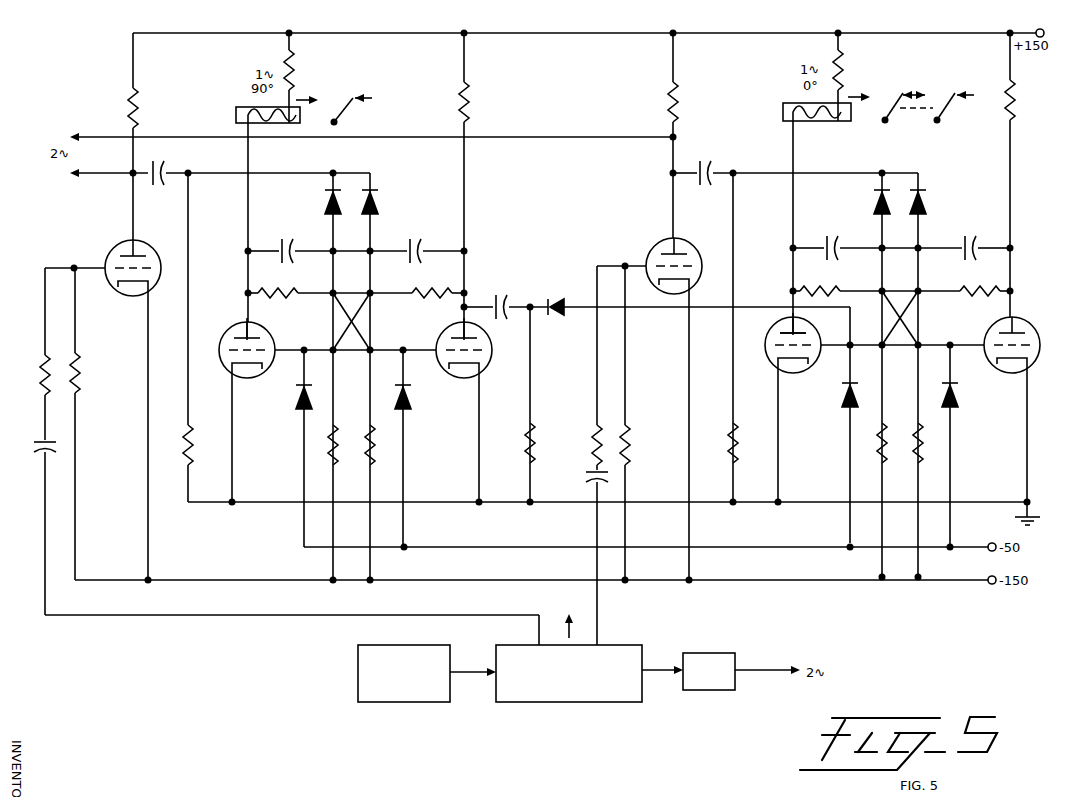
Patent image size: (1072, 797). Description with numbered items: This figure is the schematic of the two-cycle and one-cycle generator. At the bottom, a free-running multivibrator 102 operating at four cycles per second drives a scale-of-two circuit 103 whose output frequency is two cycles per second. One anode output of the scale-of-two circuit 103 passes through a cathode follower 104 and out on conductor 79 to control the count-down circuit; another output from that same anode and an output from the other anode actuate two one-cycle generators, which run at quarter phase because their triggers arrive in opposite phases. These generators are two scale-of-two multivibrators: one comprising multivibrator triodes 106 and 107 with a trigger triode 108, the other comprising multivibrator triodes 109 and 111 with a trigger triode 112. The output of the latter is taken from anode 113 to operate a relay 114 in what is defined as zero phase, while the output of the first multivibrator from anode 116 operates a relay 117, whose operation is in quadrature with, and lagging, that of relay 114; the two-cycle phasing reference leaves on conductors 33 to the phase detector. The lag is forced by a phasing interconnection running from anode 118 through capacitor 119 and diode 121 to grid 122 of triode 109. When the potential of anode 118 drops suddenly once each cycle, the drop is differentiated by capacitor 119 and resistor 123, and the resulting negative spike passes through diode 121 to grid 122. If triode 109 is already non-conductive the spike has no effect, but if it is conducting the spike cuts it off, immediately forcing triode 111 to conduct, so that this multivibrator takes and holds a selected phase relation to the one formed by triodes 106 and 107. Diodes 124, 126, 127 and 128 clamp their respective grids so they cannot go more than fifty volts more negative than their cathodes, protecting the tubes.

The conductors 33 is at (117, 141).
The conductor 79 is at (776, 672).
The free-running multivibrator 102 is at (418, 709).
The scale-of-two circuit 103 is at (586, 709).
The cathode follower 104 is at (732, 692).
The multivibrator triode 106 is at (234, 325).
The multivibrator triode 107 is at (433, 340).
The trigger triode 108 is at (121, 245).
The multivibrator triode 109 is at (770, 367).
The multivibrator triode 111 is at (1028, 368).
The trigger triode 112 is at (660, 246).
The anode 113 is at (777, 328).
The relay 114 is at (776, 117).
The anode 116 is at (259, 334).
The relay 117 is at (231, 121).
The anode 118 is at (479, 336).
The capacitor 119 is at (530, 290).
The diode 121 is at (551, 301).
The grid 122 is at (813, 337).
The resistor 123 is at (535, 444).
The diode 124 is at (294, 389).
The diode 126 is at (411, 388).
The diode 127 is at (840, 387).
The diode 128 is at (958, 386).